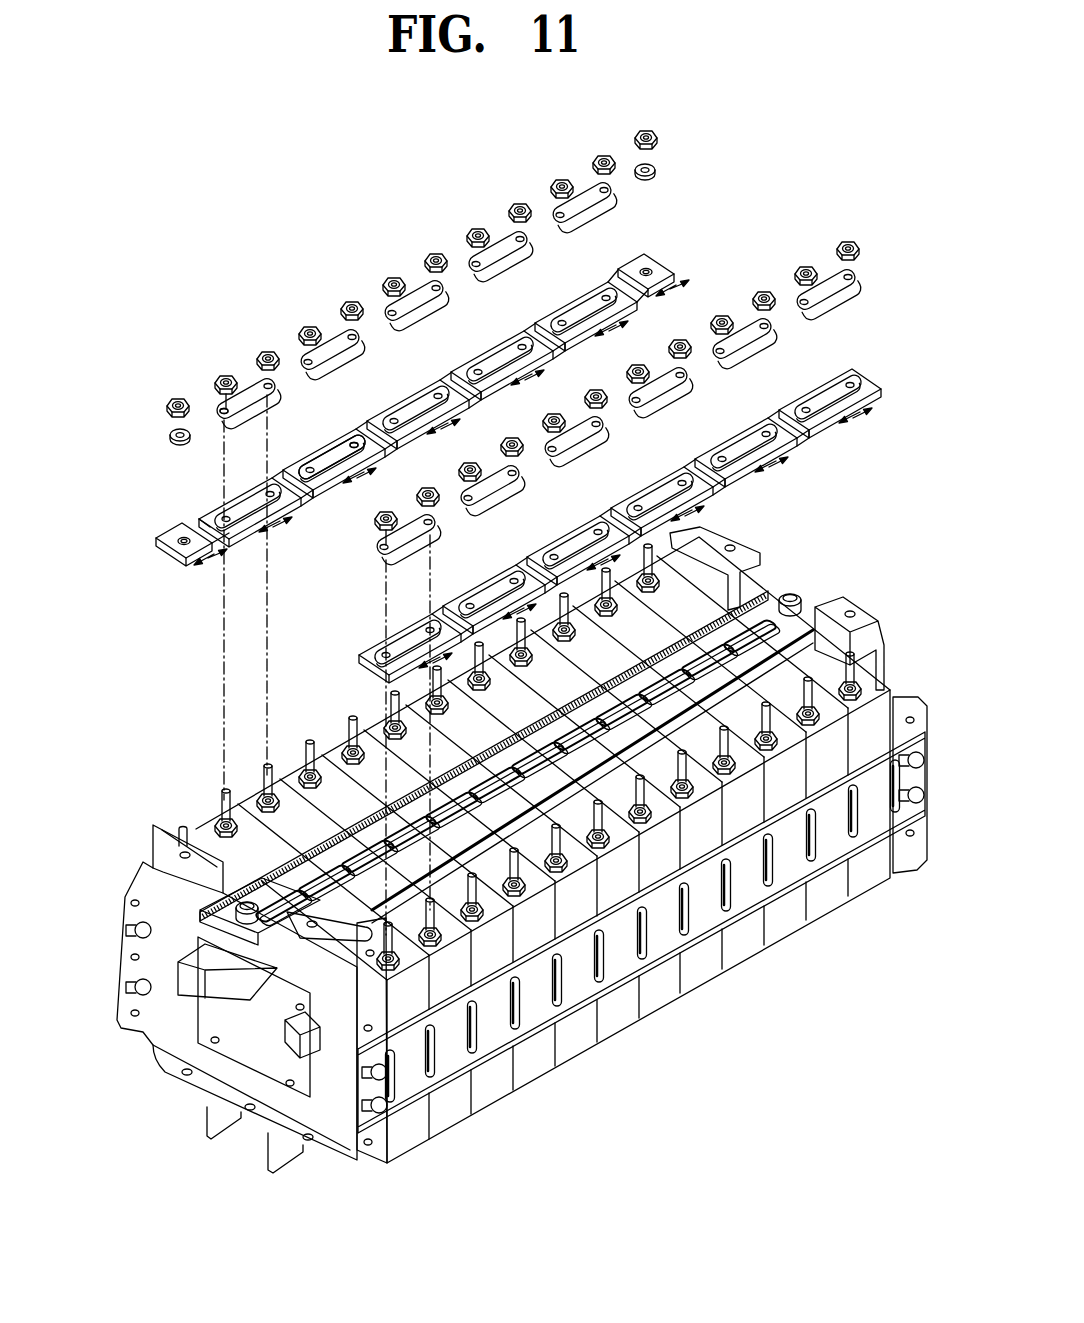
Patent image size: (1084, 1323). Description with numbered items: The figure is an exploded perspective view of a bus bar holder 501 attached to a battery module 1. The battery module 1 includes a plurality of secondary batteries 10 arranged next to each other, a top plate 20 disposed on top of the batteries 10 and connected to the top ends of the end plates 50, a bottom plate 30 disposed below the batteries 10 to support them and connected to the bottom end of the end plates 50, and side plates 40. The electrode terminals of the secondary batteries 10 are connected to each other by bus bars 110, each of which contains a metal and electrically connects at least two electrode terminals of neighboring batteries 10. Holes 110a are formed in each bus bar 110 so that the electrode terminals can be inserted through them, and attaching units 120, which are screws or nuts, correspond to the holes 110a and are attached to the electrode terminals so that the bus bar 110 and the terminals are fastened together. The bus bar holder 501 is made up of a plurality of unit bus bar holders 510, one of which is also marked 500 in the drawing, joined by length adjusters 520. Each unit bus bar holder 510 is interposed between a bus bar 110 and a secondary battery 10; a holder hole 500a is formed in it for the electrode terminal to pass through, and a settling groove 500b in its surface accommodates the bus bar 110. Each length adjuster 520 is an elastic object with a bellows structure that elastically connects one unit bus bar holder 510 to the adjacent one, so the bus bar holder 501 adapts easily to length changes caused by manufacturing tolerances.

The battery module 1 is at (845, 555).
The secondary battery 10 is at (528, 1072).
The top plate 20 is at (225, 918).
The bottom plate 30 is at (222, 1127).
The side plate 40 is at (455, 1063).
The end plate 50 is at (213, 1060).
The bus bar 110 is at (250, 390).
The hole 110a is at (215, 408).
The attaching unit 120 is at (217, 375).
The slotted bus bar 500 is at (308, 493).
The holder hole 500a is at (354, 442).
The settling groove 500b is at (330, 457).
The bus bar holder 501 is at (715, 175).
The unit bus bar holder 510 is at (576, 296).
The length adjuster 520 is at (280, 473).